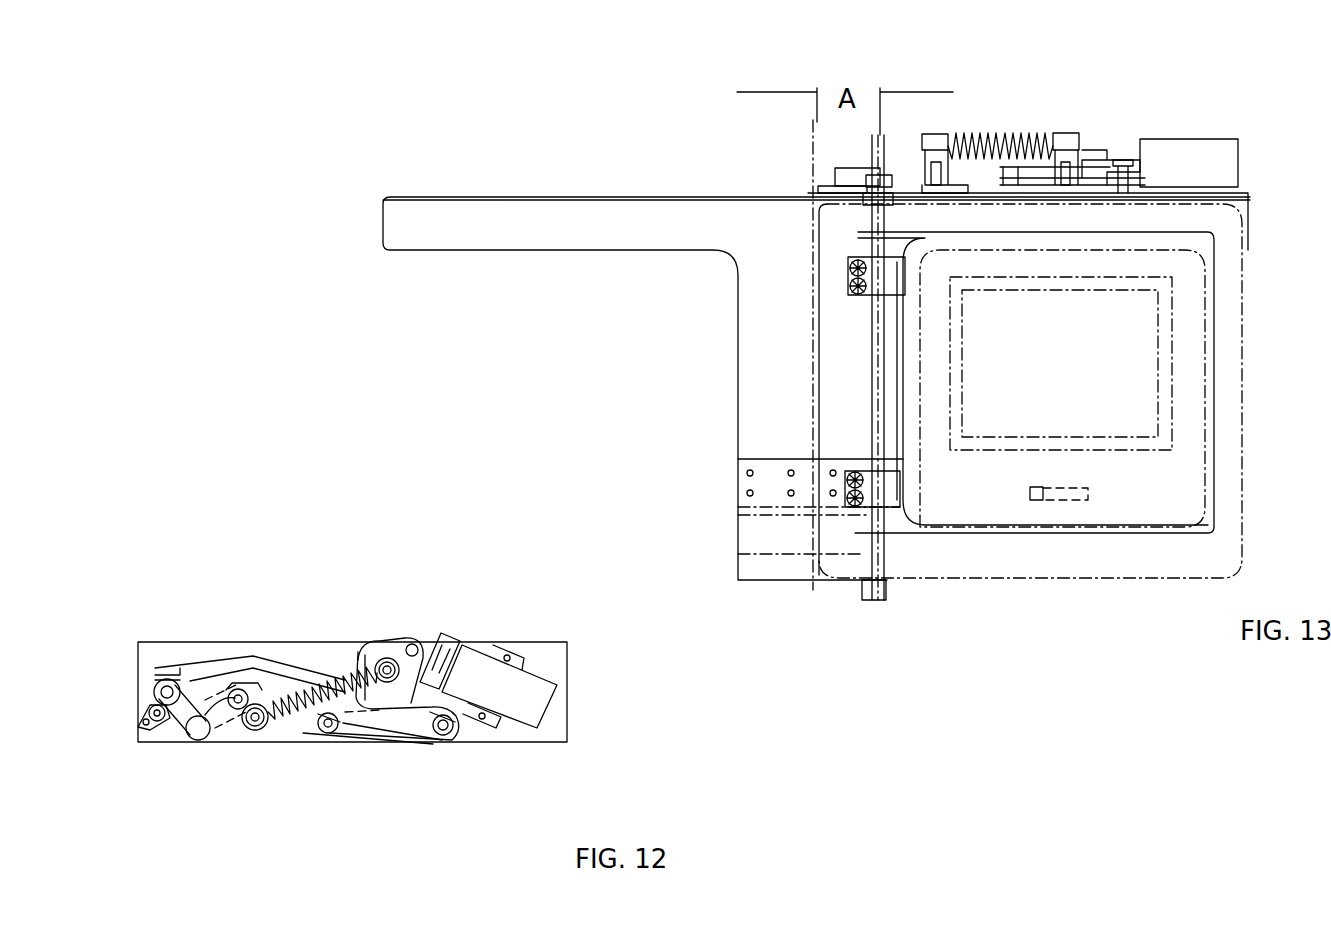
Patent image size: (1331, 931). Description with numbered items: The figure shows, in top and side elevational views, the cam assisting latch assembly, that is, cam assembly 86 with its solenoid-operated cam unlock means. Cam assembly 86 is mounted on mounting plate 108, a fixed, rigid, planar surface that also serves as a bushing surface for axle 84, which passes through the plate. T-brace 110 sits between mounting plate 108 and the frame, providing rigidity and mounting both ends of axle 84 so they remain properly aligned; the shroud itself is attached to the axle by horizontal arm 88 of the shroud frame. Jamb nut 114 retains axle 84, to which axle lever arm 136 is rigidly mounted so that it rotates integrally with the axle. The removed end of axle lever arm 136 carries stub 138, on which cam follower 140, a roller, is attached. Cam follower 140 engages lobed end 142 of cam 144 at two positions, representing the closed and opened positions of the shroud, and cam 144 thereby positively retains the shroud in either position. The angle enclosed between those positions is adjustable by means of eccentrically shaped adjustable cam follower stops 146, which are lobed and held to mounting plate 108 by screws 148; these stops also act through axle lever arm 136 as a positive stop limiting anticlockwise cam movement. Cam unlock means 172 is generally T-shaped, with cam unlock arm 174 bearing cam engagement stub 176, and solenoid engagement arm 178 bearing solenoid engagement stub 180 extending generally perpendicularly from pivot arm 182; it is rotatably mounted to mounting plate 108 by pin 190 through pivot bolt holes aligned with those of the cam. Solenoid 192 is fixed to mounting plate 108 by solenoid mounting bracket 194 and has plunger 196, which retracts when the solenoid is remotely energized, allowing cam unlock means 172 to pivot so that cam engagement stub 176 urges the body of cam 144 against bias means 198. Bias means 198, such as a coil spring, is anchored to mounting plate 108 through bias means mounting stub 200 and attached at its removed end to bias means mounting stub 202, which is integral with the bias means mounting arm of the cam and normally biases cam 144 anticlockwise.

In FIG. 12, the axle 84 is at (202, 735).
In FIG. 13, the cam assembly 86 is at (900, 535).
In FIG. 13, the horizontal arm 88 is at (1078, 533).
In FIG. 13, the mounting plate 108 is at (1243, 192).
In FIG. 12, the mounting plate 108 is at (562, 740).
In FIG. 13, the T-brace 110 is at (578, 238).
In FIG. 13, the jamb nut 114 is at (878, 174).
In FIG. 13, the axle lever arm 136 is at (855, 186).
In FIG. 12, the axle lever arm 136 is at (182, 723).
In FIG. 12, the stub 138 is at (157, 687).
In FIG. 13, the cam follower 140 is at (837, 176).
In FIG. 12, the cam follower 140 is at (162, 683).
In FIG. 12, the lobed end 142 is at (207, 670).
In FIG. 12, the cam 144 is at (413, 722).
In FIG. 12, the adjustable cam follower stops 146 is at (142, 726).
In FIG. 12, the screws 148 is at (152, 710).
In FIG. 12, the cam unlock means 172 is at (365, 727).
In FIG. 12, the cam unlock arm 174 is at (355, 730).
In FIG. 12, the cam engagement stub 176 is at (332, 730).
In FIG. 12, the solenoid engagement arm 178 is at (413, 683).
In FIG. 12, the solenoid engagement stub 180 is at (410, 645).
In FIG. 12, the pivot arm 182 is at (447, 733).
In FIG. 12, the pin 190 is at (450, 740).
In FIG. 13, the solenoid 192 is at (1165, 139).
In FIG. 12, the solenoid 192 is at (555, 683).
In FIG. 12, the solenoid mounting bracket 194 is at (500, 648).
In FIG. 13, the plunger 196 is at (1097, 149).
In FIG. 12, the plunger 196 is at (409, 670).
In FIG. 13, the bias means 198 is at (977, 137).
In FIG. 12, the bias means 198 is at (338, 690).
In FIG. 13, the bias means mounting stub 200 is at (938, 133).
In FIG. 12, the bias means mounting stub 200 is at (257, 716).
In FIG. 13, the bias means mounting stub 202 is at (1062, 133).
In FIG. 12, the bias means mounting stub 202 is at (385, 665).